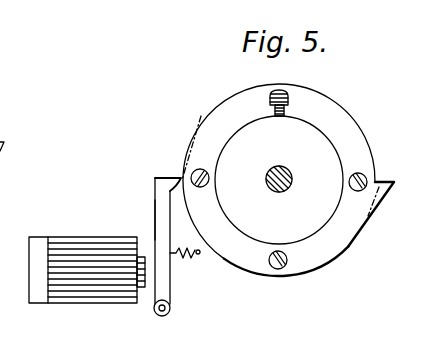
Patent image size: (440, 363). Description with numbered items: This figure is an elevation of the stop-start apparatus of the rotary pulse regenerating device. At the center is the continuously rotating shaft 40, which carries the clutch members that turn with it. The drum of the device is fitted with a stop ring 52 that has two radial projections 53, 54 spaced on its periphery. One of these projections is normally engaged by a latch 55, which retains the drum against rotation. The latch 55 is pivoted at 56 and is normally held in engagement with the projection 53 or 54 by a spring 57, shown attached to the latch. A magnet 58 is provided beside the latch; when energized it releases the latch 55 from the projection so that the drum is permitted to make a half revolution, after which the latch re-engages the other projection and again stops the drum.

The continuously rotating shaft 40 is at (292, 177).
The stop ring 52 is at (344, 128).
The radial projection 53 is at (177, 178).
The radial projection 54 is at (386, 181).
The latch 55 is at (155, 206).
The pivot 56 is at (170, 308).
The spring 57 is at (185, 264).
The magnet 58 is at (93, 246).